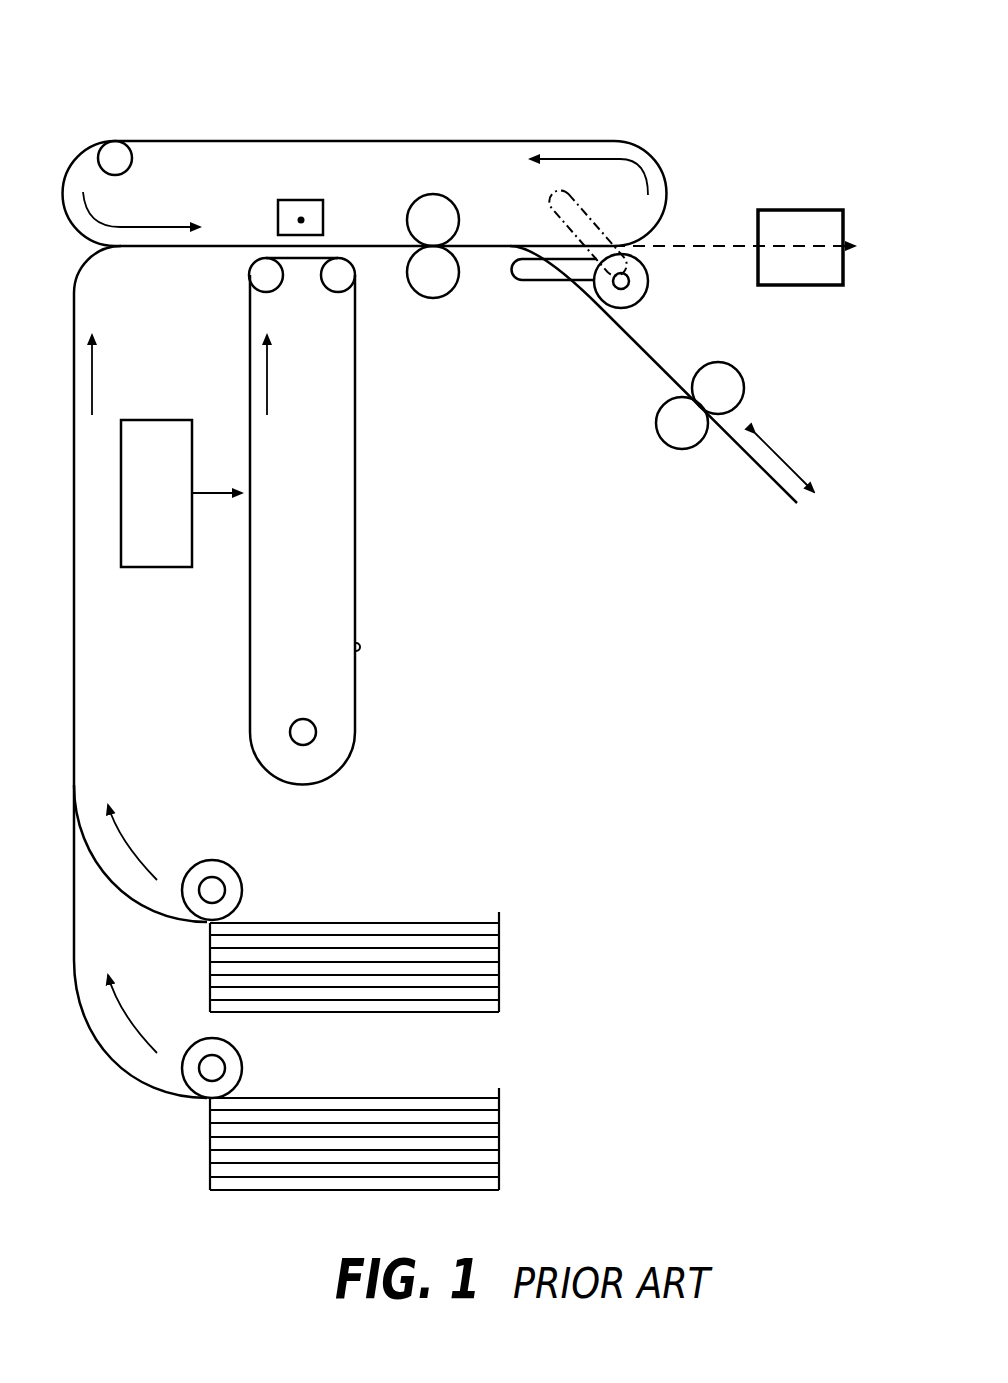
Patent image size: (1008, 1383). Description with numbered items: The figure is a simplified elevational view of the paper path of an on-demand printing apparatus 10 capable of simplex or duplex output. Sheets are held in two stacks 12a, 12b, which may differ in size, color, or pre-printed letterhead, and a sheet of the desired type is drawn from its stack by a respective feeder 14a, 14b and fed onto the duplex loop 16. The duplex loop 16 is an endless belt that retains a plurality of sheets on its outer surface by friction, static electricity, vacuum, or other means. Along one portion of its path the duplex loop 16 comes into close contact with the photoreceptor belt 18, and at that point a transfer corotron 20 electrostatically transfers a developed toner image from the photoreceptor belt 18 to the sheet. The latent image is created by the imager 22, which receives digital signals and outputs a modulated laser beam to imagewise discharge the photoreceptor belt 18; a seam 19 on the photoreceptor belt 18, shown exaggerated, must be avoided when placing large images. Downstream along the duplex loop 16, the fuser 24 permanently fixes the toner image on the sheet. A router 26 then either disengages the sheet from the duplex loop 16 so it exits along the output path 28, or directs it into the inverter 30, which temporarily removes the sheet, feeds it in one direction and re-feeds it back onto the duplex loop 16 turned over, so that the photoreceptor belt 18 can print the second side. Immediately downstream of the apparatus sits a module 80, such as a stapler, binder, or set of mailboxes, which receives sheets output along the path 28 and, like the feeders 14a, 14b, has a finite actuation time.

The printing apparatus 10 is at (260, 75).
The stack of sheets 12a is at (460, 920).
The stack of sheets 12b is at (460, 1097).
The feeder 14a is at (230, 875).
The feeder 14b is at (230, 1062).
The duplex loop 16 is at (507, 140).
The photoreceptor belt 18 is at (356, 525).
The seam 19 is at (360, 647).
The transfer corotron 20 is at (295, 200).
The imager 22 is at (138, 567).
The fuser 24 is at (433, 277).
The router 26 is at (647, 278).
The output path 28 is at (705, 246).
The inverter 30 is at (802, 394).
The module 80 is at (797, 210).